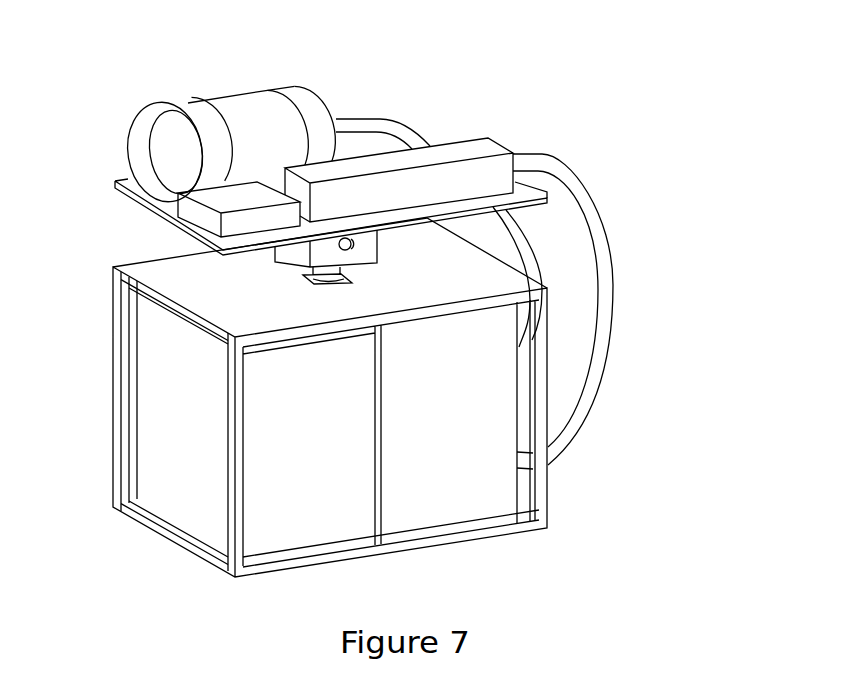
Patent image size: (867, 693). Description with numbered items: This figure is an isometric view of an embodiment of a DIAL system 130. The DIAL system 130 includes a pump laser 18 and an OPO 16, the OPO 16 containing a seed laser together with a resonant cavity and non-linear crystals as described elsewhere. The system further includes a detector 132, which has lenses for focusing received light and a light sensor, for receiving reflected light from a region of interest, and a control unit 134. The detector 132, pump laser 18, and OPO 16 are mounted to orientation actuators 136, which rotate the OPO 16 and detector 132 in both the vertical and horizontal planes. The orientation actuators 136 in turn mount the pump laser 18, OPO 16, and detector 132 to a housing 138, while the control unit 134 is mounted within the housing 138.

The DIAL system 130 is at (636, 168).
The detector 132 is at (246, 108).
The control unit 134 is at (203, 438).
The orientation actuators 136 is at (277, 260).
The housing 138 is at (423, 285).
The OPO 16 is at (222, 207).
The pump laser 18 is at (493, 146).